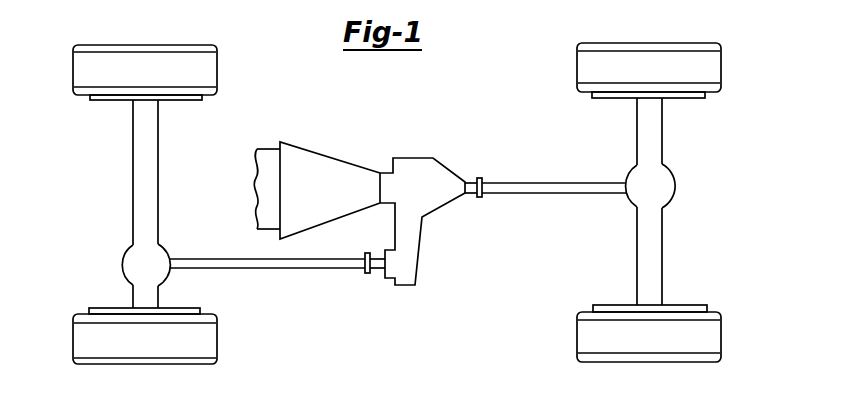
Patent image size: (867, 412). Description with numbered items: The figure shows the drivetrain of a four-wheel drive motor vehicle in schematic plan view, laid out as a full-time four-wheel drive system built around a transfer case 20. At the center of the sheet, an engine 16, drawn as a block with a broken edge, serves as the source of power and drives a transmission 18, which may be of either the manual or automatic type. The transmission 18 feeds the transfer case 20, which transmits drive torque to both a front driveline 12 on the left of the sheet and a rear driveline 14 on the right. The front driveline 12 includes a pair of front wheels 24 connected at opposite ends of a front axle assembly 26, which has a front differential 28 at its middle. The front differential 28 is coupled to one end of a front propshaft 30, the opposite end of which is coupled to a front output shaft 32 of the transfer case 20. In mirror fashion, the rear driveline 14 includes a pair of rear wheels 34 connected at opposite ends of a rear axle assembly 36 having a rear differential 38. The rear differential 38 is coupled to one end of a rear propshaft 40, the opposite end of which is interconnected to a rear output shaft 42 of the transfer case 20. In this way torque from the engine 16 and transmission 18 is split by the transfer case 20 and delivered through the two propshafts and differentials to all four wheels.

The front driveline 12 is at (178, 197).
The rear driveline 14 is at (587, 156).
The engine 16 is at (265, 175).
The transmission 18 is at (336, 200).
The transfer case 20 is at (448, 213).
The front wheels 24 is at (107, 70).
The front axle assembly 26 is at (138, 144).
The front differential 28 is at (133, 254).
The front propshaft 30 is at (338, 268).
The front output shaft 32 is at (377, 272).
The rear wheels 34 is at (618, 75).
The rear axle assembly 36 is at (650, 124).
The rear differential 38 is at (658, 183).
The rear propshaft 40 is at (588, 193).
The rear output shaft 42 is at (478, 177).